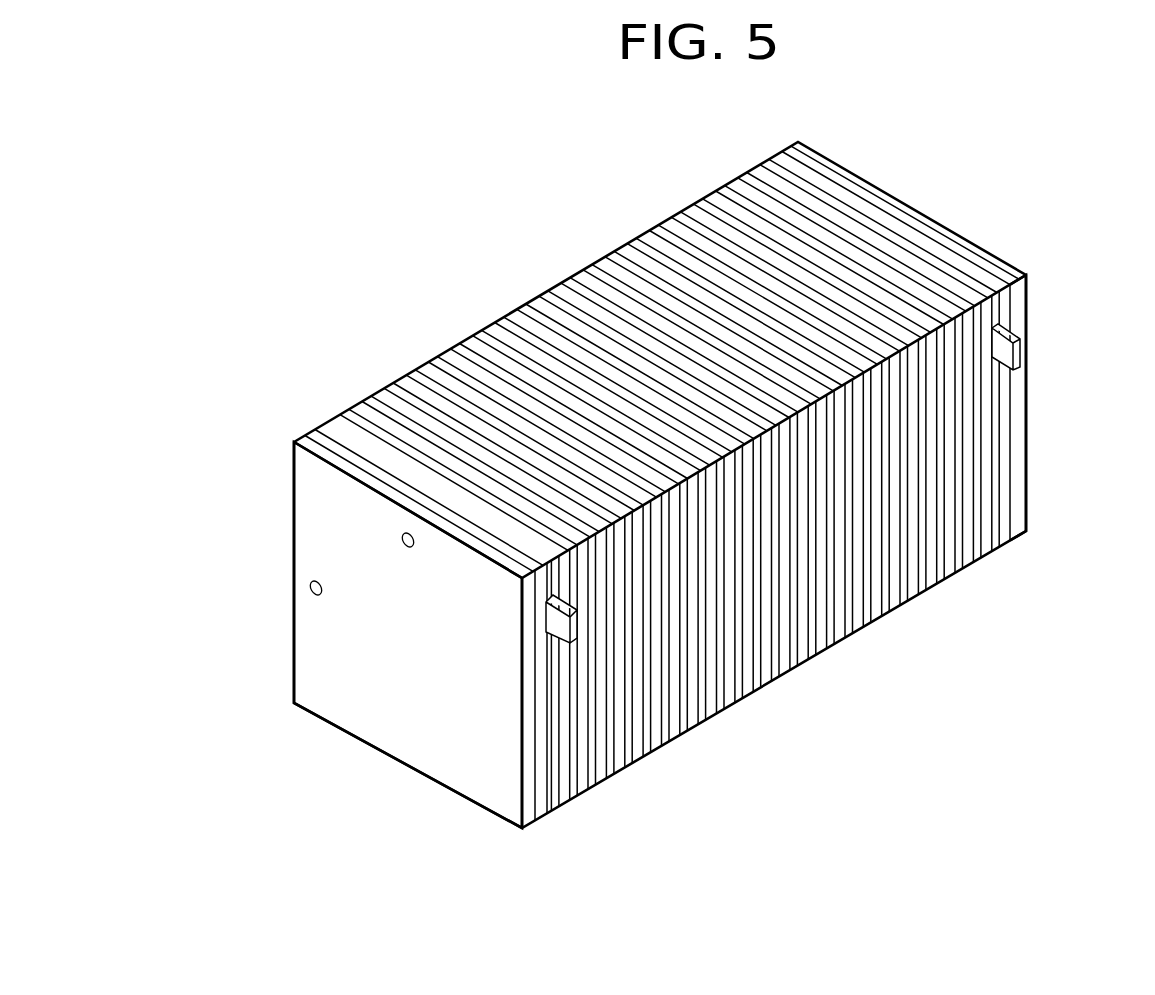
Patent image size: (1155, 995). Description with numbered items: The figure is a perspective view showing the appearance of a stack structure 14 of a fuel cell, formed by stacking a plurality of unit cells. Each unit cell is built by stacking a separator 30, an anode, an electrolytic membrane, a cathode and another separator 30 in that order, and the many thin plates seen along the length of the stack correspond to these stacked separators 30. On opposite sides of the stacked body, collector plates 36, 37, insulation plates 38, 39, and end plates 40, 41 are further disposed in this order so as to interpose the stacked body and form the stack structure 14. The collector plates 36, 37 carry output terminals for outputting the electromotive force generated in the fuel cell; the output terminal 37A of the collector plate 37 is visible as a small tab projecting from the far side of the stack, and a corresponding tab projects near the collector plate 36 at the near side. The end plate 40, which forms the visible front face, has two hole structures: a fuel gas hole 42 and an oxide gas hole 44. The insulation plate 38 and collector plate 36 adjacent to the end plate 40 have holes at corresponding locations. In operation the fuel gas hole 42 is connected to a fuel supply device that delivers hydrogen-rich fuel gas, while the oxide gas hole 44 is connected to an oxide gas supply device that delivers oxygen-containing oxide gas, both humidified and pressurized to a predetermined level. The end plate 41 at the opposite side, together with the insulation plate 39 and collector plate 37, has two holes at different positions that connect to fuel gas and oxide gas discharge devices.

The stack structure 14 is at (503, 237).
The separator 30 is at (893, 609).
The collector plate 36 is at (548, 812).
The collector plate 37 is at (1002, 545).
The output terminal 37A is at (1005, 352).
The insulation plate 38 is at (547, 826).
The insulation plate 39 is at (1012, 550).
The end plate 40 is at (493, 803).
The end plate 41 is at (1020, 507).
The fuel gas hole 42 is at (311, 591).
The oxide gas hole 44 is at (407, 546).